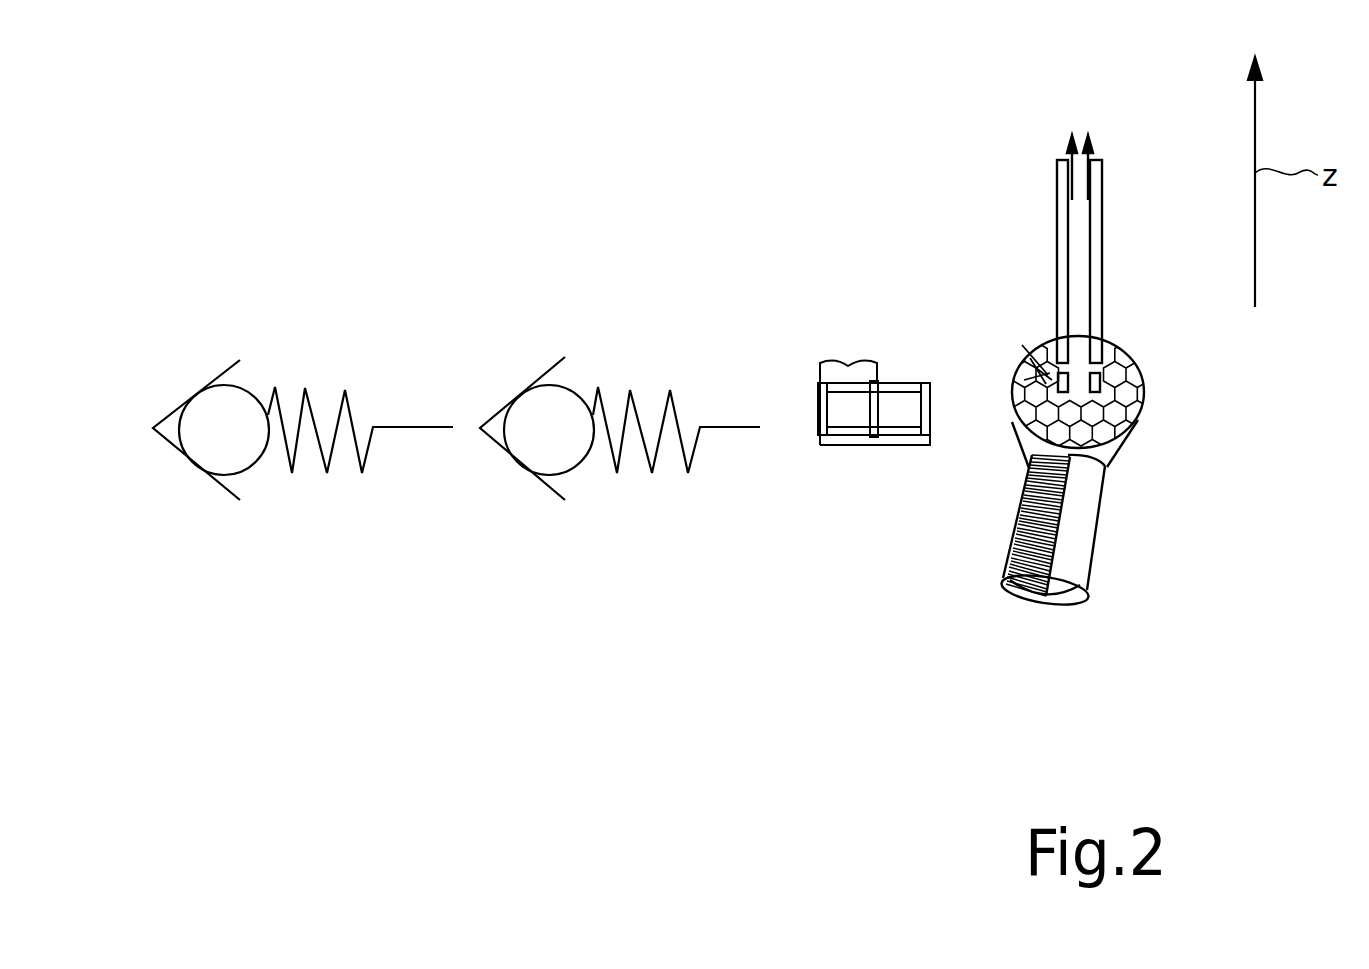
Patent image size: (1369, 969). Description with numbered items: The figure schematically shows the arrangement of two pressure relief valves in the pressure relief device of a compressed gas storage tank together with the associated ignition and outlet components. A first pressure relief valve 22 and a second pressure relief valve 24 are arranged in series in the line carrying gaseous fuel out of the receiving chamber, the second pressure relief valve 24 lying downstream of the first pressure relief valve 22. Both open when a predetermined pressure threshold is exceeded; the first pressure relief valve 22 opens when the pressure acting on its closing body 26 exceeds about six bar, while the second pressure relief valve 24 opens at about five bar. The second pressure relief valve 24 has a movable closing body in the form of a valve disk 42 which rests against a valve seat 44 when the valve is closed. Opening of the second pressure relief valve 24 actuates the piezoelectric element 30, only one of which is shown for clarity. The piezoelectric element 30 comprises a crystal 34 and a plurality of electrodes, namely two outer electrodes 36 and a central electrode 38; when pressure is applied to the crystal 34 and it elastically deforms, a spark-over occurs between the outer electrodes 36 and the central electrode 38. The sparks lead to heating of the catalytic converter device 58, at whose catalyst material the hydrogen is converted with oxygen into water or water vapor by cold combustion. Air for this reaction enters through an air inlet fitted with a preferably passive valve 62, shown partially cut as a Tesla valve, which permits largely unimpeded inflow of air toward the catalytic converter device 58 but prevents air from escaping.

The first pressure relief valve 22 is at (222, 318).
The second pressure relief valve 24 is at (663, 292).
The closing body 26 is at (245, 400).
The piezoelectric element 30 is at (869, 290).
The crystal 34 is at (848, 418).
The outer electrode 36 is at (818, 425).
The central electrode 38 is at (878, 385).
The valve disk 42 is at (560, 398).
The valve seat 44 is at (548, 490).
The catalytic converter device 58 is at (1133, 392).
The passive valve 62 is at (1065, 528).